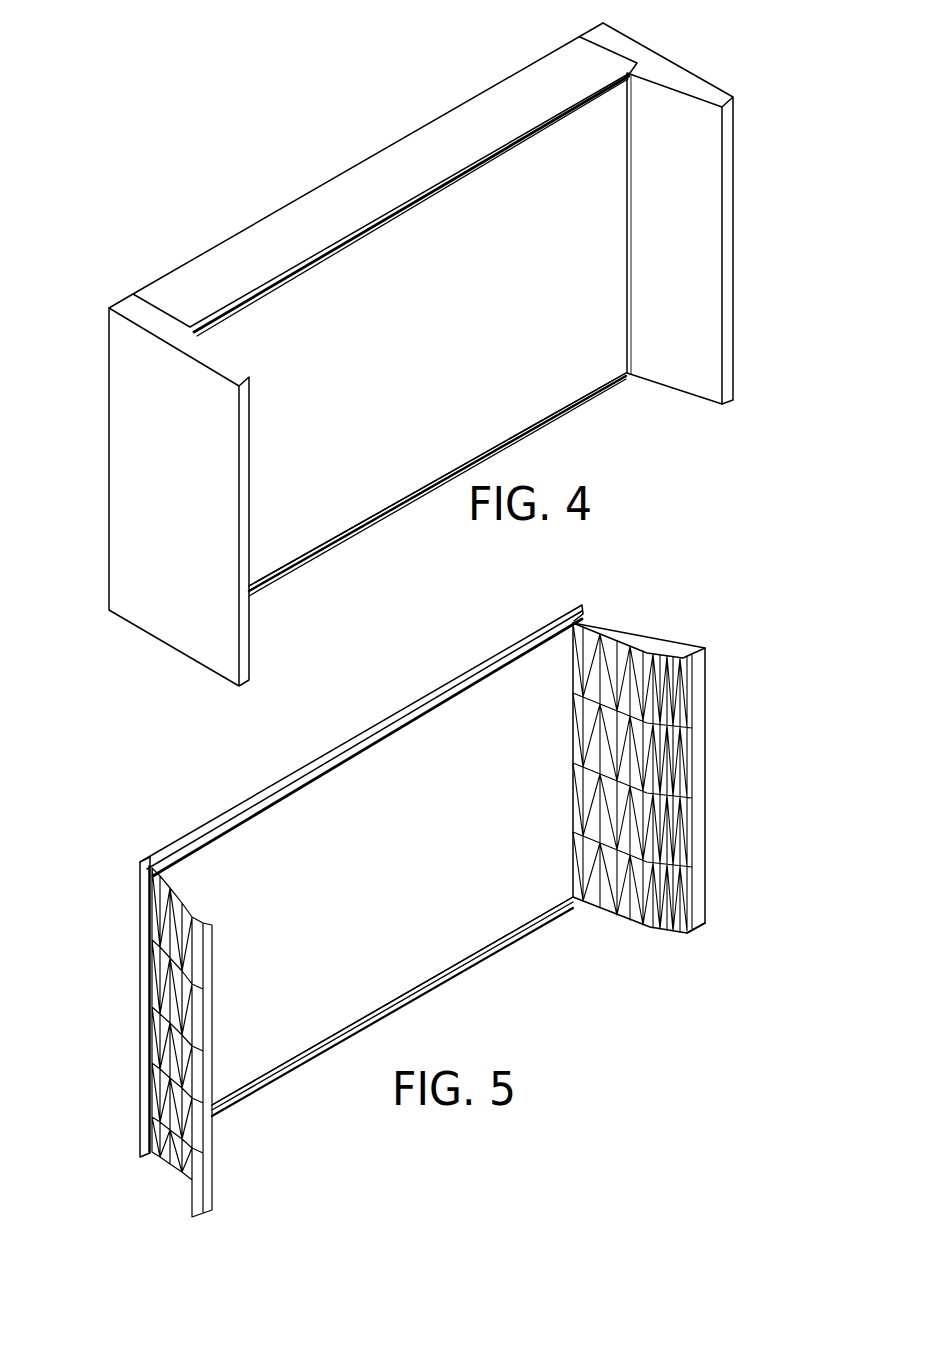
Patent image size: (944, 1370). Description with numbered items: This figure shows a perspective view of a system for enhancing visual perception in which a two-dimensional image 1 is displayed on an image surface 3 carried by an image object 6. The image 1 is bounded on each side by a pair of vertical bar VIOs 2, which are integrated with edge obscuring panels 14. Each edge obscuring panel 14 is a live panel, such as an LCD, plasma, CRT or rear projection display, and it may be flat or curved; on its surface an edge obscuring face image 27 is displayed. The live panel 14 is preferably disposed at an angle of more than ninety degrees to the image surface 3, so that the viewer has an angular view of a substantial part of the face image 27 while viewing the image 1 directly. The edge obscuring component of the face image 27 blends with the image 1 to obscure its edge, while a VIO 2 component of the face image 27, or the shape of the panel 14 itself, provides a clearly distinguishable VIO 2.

In FIG. 4, the 2D image 1 is at (500, 233).
In FIG. 5, the 2D image 1 is at (388, 843).
In FIG. 4, the VIO 2 is at (247, 424).
In FIG. 5, the VIO 2 is at (200, 1003).
In FIG. 4, the image surface 3 is at (582, 360).
In FIG. 5, the image surface 3 is at (493, 930).
In FIG. 4, the image object 6 is at (397, 175).
In FIG. 5, the image object 6 is at (230, 810).
In FIG. 4, the edge obscuring panel 14 is at (708, 332).
In FIG. 5, the edge obscuring panel 14 is at (665, 815).
In FIG. 4, the face image 27 is at (687, 195).
In FIG. 5, the face image 27 is at (685, 934).